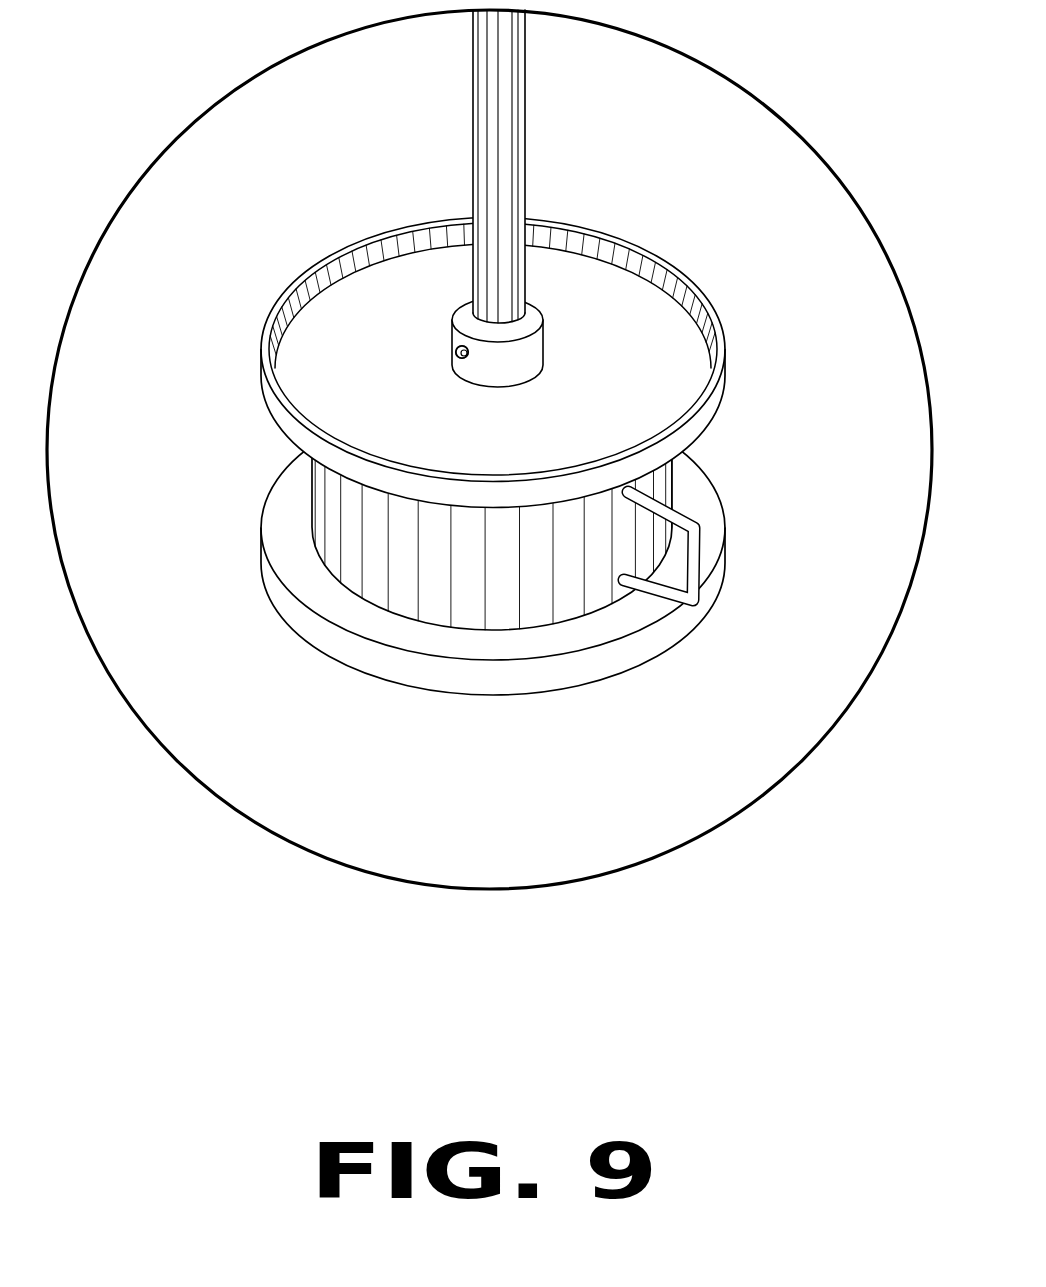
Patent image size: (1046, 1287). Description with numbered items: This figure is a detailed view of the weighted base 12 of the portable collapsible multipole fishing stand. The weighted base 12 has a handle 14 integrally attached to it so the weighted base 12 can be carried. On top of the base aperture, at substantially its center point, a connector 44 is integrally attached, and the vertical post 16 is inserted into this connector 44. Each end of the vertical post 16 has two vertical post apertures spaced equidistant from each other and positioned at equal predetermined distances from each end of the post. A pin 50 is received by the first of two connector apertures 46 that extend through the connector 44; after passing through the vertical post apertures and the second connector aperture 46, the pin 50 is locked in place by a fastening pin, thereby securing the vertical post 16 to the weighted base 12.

The weighted base 12 is at (722, 522).
The handle 14 is at (700, 573).
The vertical post 16 is at (526, 100).
The connector 44 is at (470, 337).
The connector aperture 46 is at (460, 360).
The pin 50 is at (455, 354).